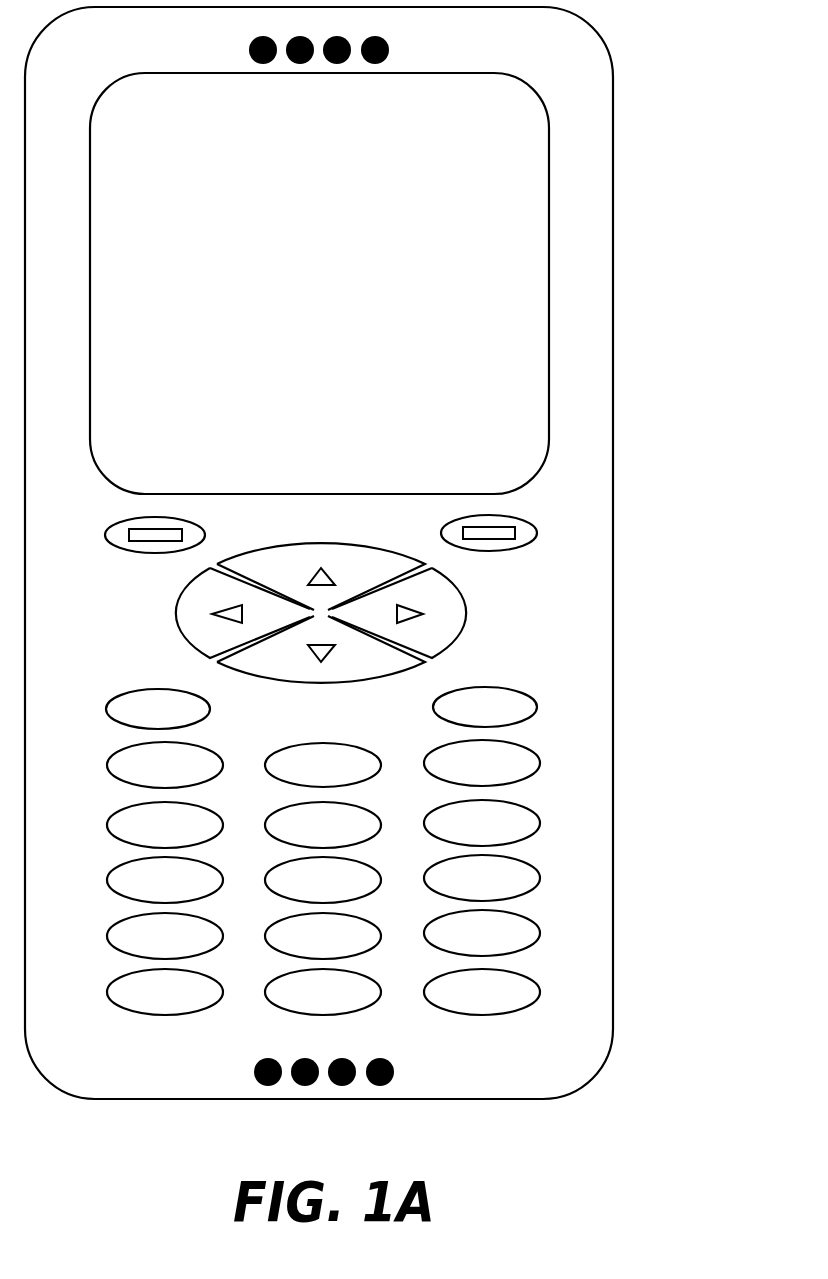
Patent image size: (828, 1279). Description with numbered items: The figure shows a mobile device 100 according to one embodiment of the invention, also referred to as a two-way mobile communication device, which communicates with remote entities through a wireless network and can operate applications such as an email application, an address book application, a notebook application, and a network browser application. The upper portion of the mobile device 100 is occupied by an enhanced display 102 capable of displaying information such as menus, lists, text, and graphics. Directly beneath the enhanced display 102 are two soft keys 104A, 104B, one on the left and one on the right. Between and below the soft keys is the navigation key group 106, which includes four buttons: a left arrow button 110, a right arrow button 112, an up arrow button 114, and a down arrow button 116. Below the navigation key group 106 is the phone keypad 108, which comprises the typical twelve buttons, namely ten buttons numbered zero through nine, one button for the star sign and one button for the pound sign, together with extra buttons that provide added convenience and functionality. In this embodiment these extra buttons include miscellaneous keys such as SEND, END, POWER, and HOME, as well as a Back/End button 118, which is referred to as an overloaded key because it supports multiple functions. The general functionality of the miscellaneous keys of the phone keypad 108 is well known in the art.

The mobile device 100 is at (612, 205).
The enhanced display 102 is at (458, 295).
The soft key 104A is at (165, 518).
The soft key 104B is at (508, 516).
The navigation key group 106 is at (404, 613).
The phone keypad 108 is at (398, 814).
The left arrow button 110 is at (178, 640).
The right arrow button 112 is at (467, 635).
The up arrow button 114 is at (277, 547).
The down arrow button 116 is at (272, 683).
The Back/End button 118 is at (570, 755).